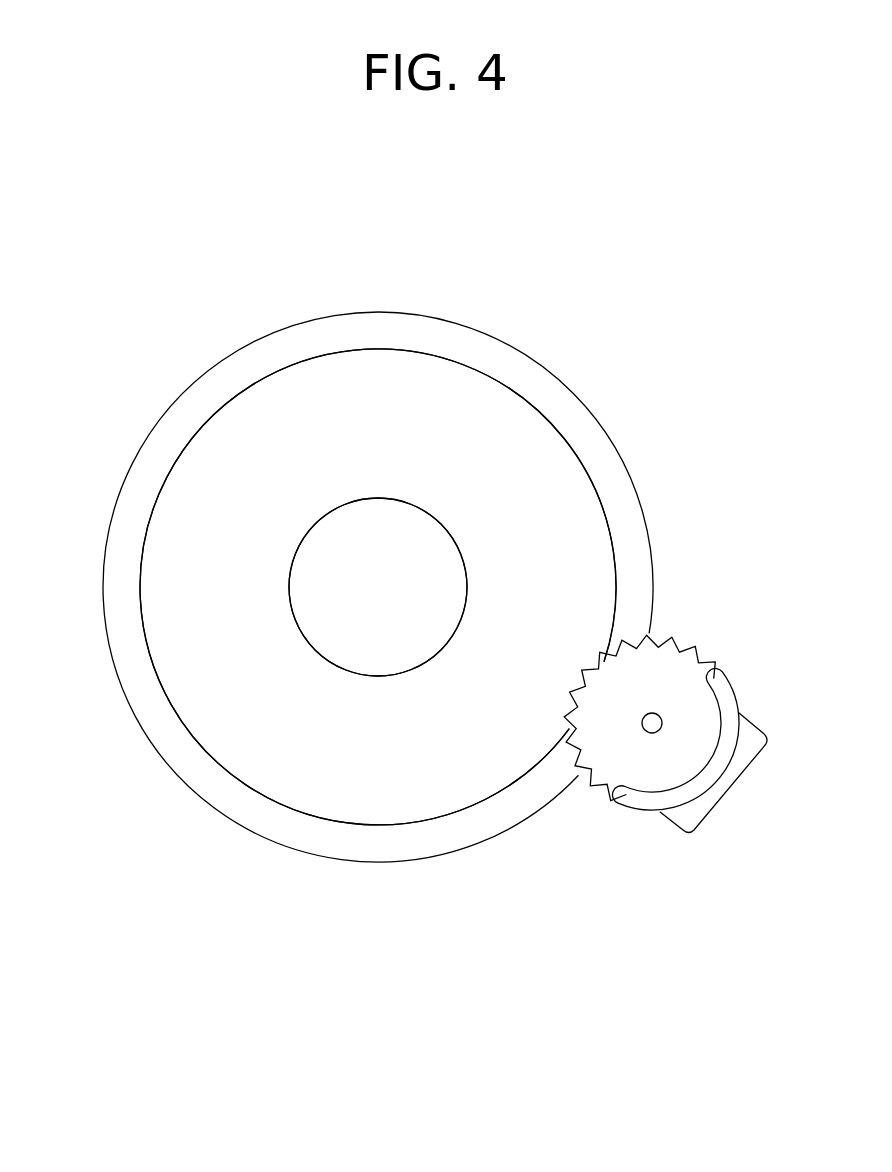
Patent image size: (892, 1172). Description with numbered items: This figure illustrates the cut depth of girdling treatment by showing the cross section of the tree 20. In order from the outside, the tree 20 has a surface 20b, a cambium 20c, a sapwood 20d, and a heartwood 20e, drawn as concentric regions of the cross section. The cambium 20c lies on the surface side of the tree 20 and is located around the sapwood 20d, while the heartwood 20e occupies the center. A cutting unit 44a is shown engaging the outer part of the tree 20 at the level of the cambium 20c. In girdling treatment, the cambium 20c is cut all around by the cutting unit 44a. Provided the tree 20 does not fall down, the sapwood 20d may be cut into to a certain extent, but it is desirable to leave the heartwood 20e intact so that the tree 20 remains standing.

The tree 20 is at (406, 603).
The surface 20b is at (593, 410).
The cambium 20c is at (495, 382).
The sapwood 20d is at (418, 425).
The heartwood 20e is at (358, 552).
The cutting unit 44a is at (608, 806).